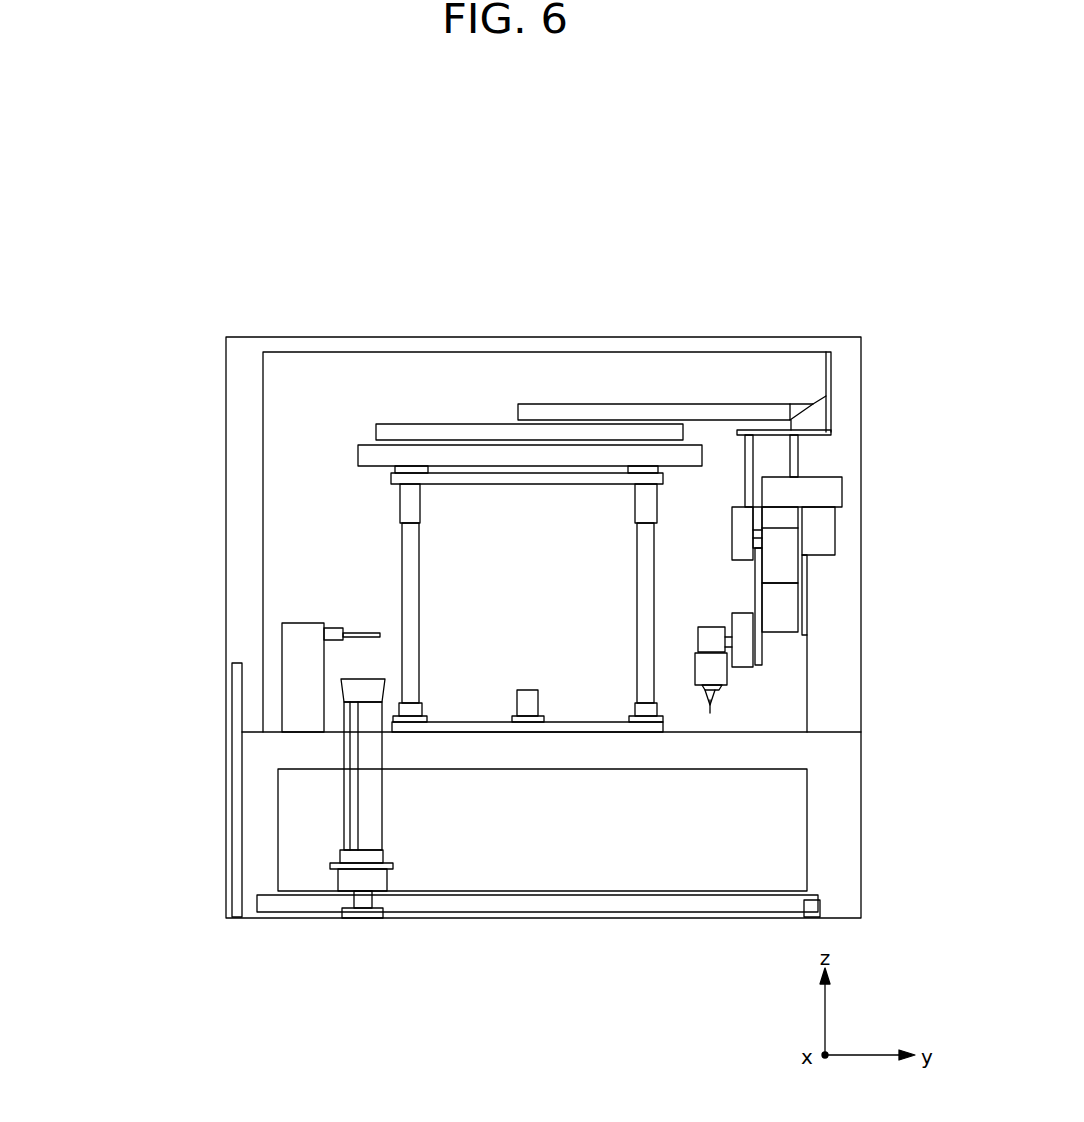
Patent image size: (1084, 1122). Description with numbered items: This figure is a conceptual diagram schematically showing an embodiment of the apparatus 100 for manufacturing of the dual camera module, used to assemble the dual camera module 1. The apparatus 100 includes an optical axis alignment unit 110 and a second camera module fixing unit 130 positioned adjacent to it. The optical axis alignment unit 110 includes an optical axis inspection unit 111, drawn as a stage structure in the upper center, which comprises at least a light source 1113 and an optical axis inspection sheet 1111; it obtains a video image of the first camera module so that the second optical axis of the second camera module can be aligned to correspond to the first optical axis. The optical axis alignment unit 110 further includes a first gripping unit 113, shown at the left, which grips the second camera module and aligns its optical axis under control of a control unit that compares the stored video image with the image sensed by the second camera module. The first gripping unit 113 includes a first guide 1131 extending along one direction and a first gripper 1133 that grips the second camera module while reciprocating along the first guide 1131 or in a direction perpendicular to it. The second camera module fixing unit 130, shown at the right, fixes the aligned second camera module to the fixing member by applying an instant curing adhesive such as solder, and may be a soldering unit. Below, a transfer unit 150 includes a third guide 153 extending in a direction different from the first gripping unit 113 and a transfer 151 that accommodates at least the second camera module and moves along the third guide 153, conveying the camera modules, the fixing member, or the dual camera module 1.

The apparatus for manufacturing of the dual camera module 100 is at (755, 189).
The optical axis alignment unit 110 is at (444, 400).
The optical axis inspection unit 111 is at (530, 351).
The light source 1113 is at (515, 455).
The optical axis inspection sheet 1111 is at (620, 480).
The first gripping unit 113 is at (213, 649).
The first guide 1131 is at (295, 650).
The first gripper 1133 is at (363, 633).
The dual camera module 1 is at (527, 690).
The second camera module fixing unit 130 is at (752, 672).
The transfer unit 150 is at (440, 804).
The transfer 151 is at (355, 810).
The third guide 153 is at (260, 903).